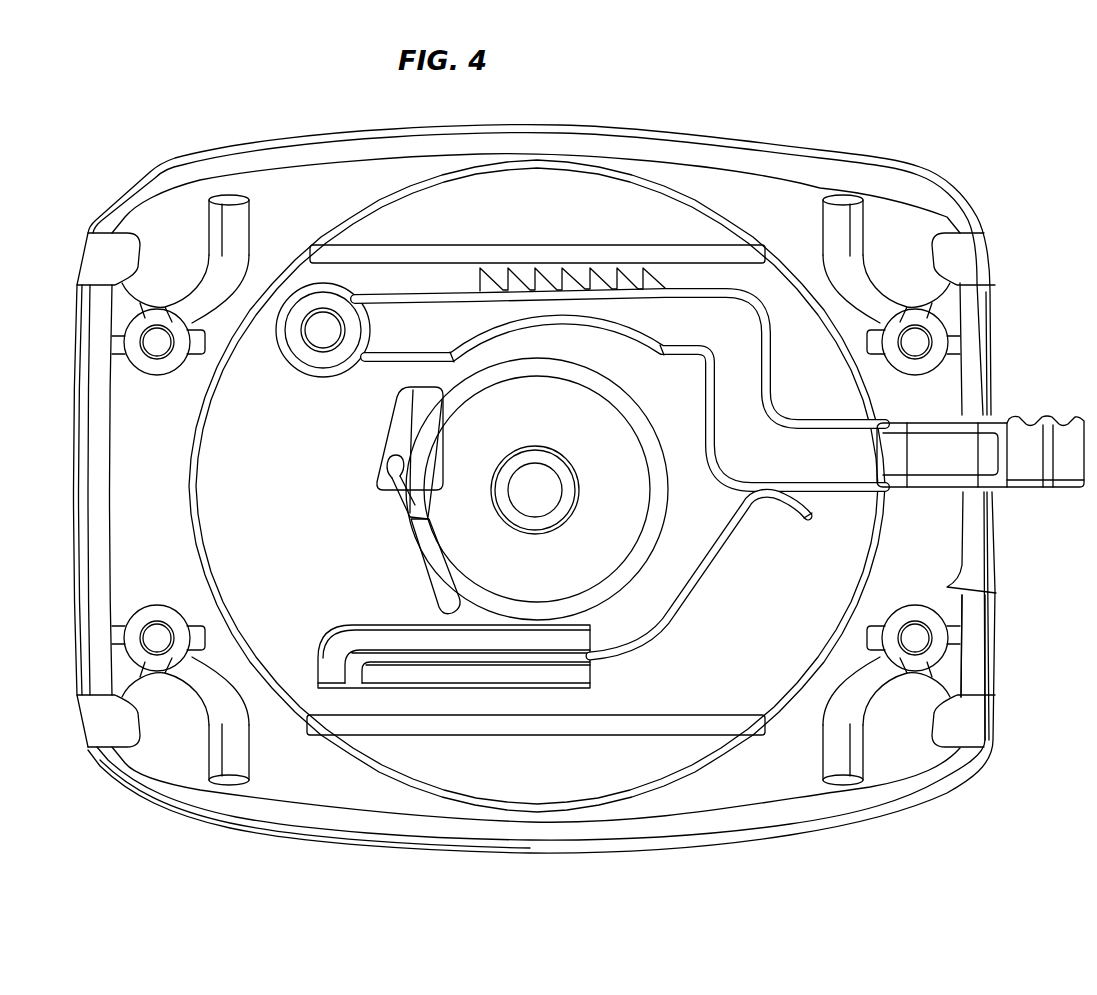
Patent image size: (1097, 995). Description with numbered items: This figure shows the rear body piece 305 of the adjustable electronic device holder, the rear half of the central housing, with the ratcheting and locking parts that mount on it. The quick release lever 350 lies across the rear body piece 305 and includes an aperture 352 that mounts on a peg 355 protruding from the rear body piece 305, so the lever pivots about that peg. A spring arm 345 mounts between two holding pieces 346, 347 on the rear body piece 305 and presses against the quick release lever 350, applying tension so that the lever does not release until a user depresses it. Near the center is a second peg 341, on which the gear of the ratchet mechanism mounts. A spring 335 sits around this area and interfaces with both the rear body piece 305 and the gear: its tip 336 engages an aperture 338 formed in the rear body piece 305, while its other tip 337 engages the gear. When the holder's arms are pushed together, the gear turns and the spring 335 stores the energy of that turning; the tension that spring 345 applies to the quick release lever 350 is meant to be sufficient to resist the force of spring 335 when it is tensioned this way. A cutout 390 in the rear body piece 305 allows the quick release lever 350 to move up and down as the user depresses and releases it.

The rear body piece 305 is at (260, 148).
The spring 335 is at (652, 442).
The tip of spring 336 is at (396, 473).
The other tip of spring 337 is at (440, 584).
The aperture of rear body piece 338 is at (403, 422).
The peg 341 is at (548, 497).
The spring arm 345 is at (680, 600).
The holding piece 346 is at (596, 676).
The holding piece 347 is at (345, 636).
The quick release lever 350 is at (745, 378).
The aperture 352 is at (332, 327).
The peg 355 is at (290, 345).
The cutout 390 is at (984, 566).